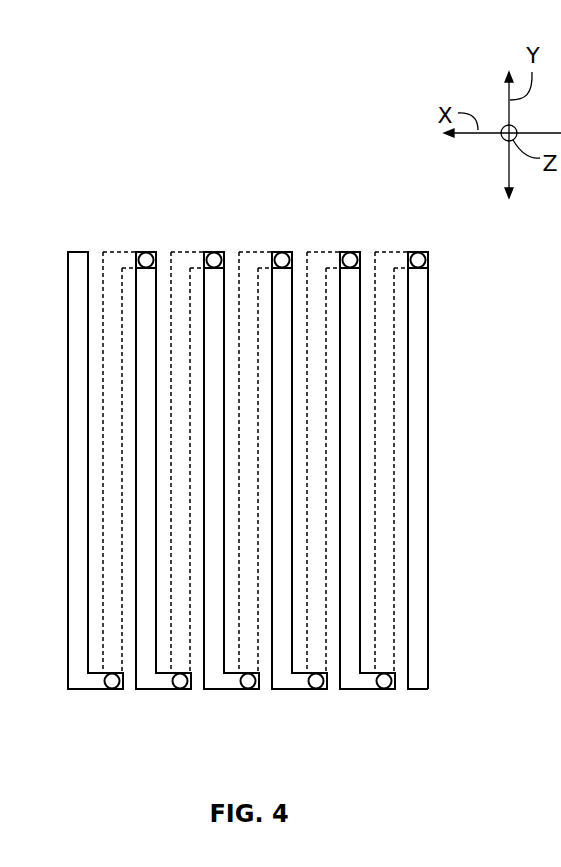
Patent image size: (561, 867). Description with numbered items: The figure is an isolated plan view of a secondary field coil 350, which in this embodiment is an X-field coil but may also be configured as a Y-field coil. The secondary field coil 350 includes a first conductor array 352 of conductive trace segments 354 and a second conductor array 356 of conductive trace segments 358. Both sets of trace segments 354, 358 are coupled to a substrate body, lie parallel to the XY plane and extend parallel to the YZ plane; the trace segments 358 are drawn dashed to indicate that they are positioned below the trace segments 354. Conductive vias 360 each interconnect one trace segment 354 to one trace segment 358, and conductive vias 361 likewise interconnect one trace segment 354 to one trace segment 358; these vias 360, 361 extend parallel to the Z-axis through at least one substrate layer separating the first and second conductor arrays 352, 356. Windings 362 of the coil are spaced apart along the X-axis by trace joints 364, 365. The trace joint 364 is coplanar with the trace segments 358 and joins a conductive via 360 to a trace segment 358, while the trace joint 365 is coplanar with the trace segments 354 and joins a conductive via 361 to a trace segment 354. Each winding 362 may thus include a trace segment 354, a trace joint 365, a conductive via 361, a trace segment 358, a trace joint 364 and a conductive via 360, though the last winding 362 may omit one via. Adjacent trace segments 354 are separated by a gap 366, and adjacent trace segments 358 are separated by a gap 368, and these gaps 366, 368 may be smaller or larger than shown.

The secondary field coil 350 is at (126, 170).
The first conductor array 352 is at (440, 308).
The conductive trace segments 354 is at (418, 382).
The second conductor array 356 is at (406, 494).
The conductive trace segments 358 is at (385, 583).
The conductive via 360 is at (147, 252).
The conductive via 361 is at (115, 690).
The winding 362 is at (137, 247).
The trace joint 364 is at (268, 252).
The trace joint 365 is at (162, 689).
The gap 366 is at (412, 697).
The gap 368 is at (240, 247).